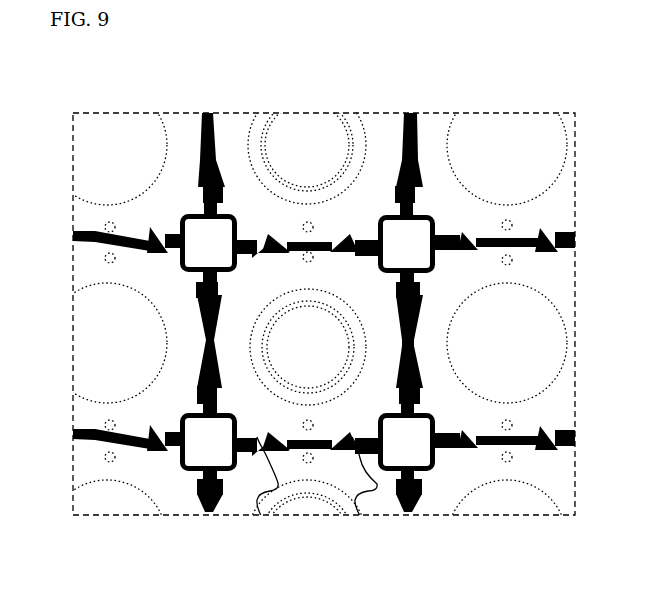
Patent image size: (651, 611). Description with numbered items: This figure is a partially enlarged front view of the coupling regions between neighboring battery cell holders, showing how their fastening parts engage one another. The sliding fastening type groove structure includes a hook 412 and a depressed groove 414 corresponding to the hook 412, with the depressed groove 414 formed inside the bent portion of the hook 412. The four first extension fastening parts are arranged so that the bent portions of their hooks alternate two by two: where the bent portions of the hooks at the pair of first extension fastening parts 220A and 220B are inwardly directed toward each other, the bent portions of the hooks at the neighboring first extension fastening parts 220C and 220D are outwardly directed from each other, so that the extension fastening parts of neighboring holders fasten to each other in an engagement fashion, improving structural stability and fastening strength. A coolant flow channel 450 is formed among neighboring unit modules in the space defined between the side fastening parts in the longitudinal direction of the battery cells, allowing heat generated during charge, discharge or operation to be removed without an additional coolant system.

The coolant flow channel 450 is at (212, 240).
The hook 412 is at (209, 190).
The depressed groove 414 is at (205, 196).
The first extension fastening part 220C is at (204, 297).
The first extension fastening part 220D is at (204, 382).
The first extension fastening part 220A is at (273, 537).
The first extension fastening part 220B is at (373, 538).